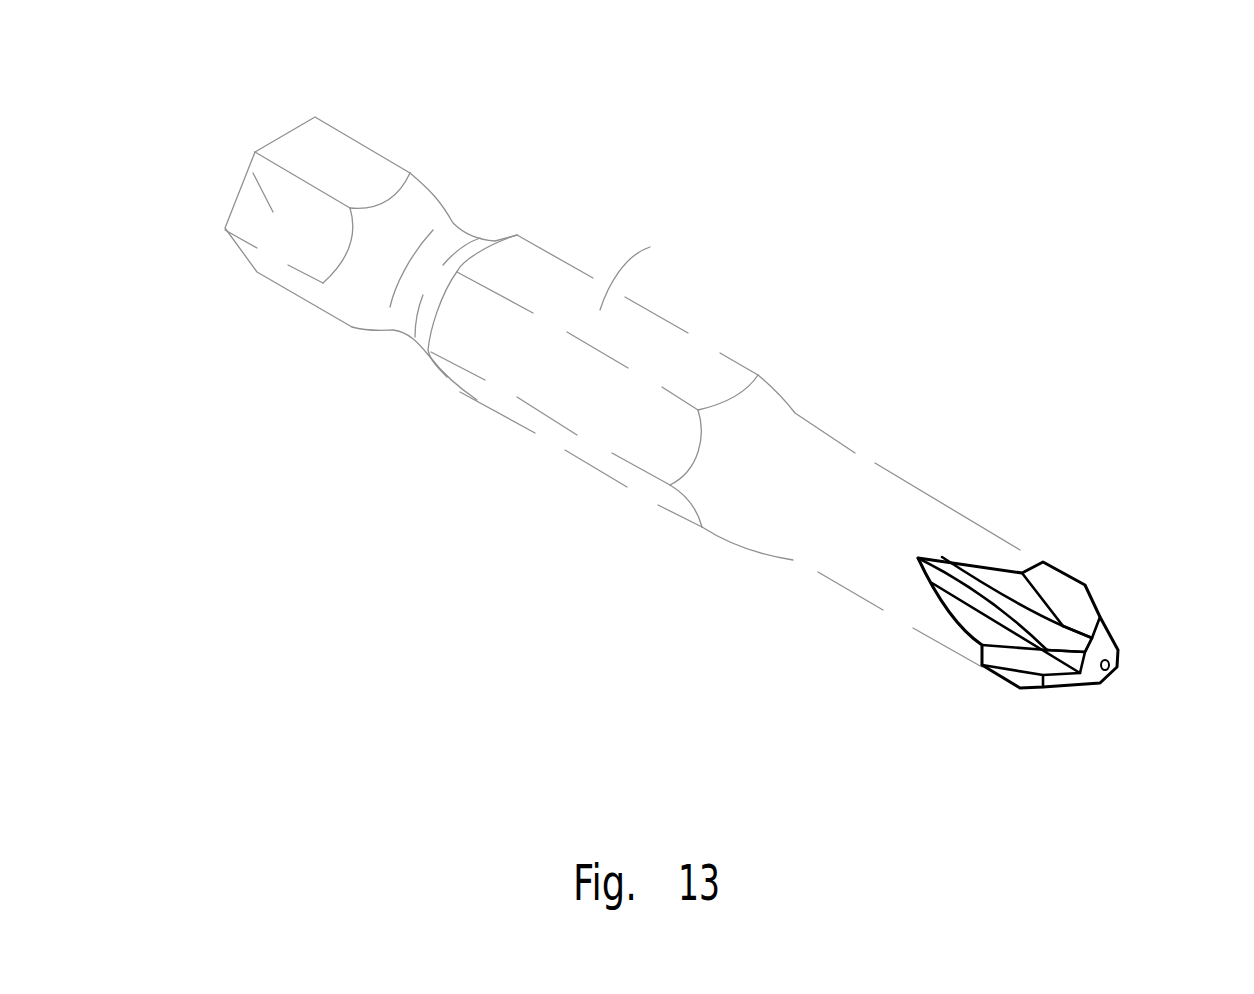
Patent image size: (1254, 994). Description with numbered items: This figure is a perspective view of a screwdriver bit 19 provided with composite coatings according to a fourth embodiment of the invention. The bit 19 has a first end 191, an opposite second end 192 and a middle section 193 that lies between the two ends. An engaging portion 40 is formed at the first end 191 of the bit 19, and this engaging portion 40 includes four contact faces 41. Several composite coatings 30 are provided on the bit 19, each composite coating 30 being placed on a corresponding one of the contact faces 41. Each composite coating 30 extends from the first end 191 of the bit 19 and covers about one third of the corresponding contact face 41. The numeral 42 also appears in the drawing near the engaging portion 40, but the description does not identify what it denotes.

The bit 19 is at (567, 510).
The first end 191 is at (1112, 672).
The second end 192 is at (228, 148).
The middle section 193 is at (688, 255).
The composite coating 30 is at (1073, 640).
The engaging portion 40 is at (982, 710).
The contact face 41 is at (987, 625).
The cutting facet 42 is at (1037, 573).